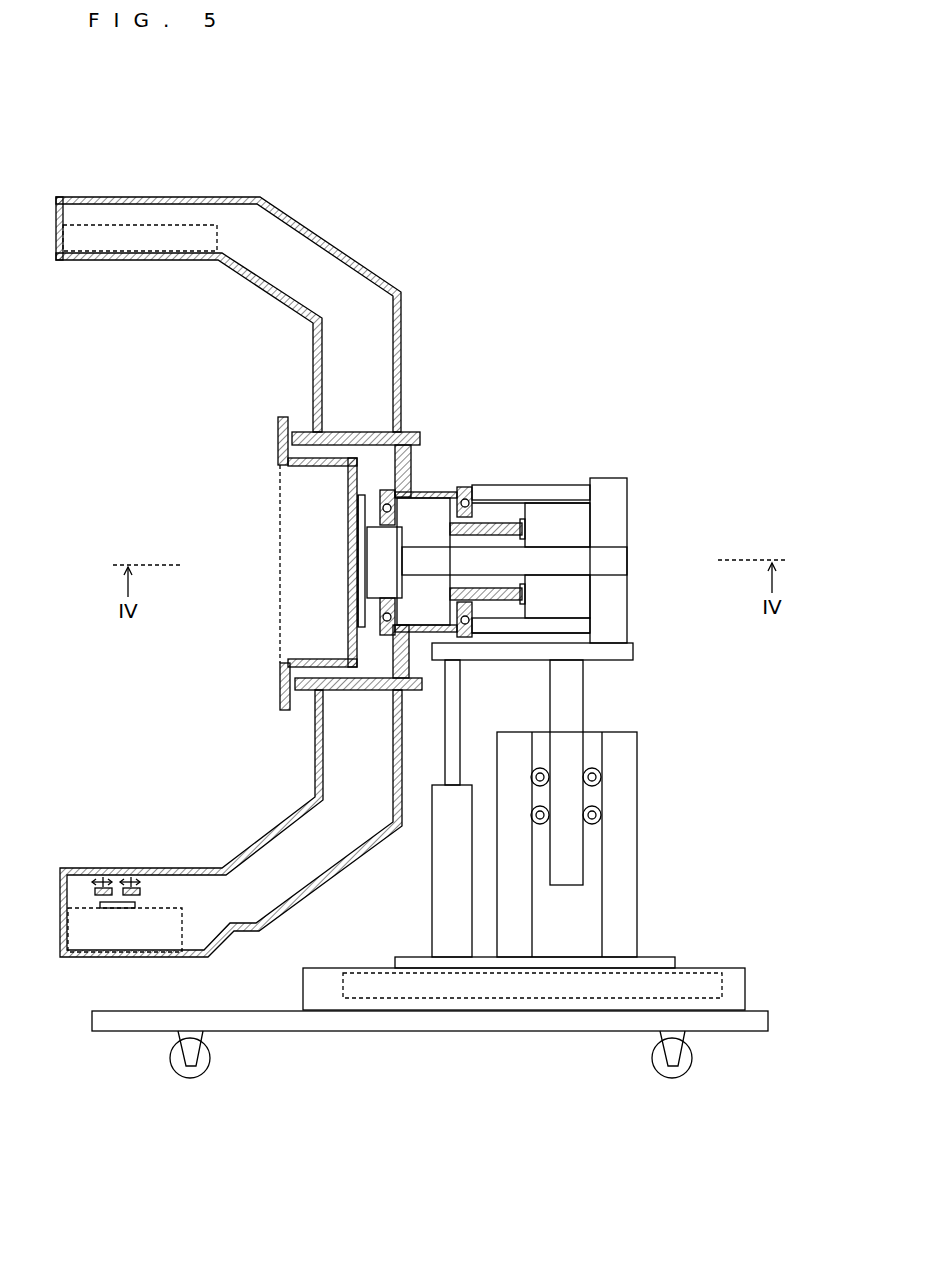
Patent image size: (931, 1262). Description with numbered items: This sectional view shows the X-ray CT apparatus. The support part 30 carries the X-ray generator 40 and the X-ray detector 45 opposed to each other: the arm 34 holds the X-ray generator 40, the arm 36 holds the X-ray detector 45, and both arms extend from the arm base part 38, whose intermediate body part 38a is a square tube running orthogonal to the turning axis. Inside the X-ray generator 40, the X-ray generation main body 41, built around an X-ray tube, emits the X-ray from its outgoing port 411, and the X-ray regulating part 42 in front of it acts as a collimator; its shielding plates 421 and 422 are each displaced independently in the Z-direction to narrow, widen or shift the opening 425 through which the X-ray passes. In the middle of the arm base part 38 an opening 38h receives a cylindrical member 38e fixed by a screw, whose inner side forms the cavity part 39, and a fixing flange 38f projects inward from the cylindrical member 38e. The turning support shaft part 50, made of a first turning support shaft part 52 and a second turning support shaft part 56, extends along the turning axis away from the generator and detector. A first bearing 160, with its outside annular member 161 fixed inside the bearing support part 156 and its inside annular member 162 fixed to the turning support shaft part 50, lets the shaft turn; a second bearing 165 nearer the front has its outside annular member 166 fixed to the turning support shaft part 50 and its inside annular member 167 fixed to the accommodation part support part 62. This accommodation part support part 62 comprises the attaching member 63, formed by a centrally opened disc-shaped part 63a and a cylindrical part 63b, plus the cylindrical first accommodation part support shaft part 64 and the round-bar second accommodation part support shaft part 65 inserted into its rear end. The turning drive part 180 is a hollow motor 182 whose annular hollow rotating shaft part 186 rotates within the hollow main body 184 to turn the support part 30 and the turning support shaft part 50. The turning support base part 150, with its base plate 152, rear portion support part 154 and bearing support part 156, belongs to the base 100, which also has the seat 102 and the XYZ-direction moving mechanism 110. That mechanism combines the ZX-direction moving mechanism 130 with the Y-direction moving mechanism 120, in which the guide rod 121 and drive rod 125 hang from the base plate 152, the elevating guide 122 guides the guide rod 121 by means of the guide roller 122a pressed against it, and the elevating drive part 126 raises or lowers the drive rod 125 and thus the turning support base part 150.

The support part 30 is at (265, 570).
The arm 36 is at (93, 196).
The X-ray detector 45 is at (218, 240).
The arm base part 38 is at (313, 358).
The intermediate body part 38a is at (402, 308).
The cylindrical member 38e is at (350, 432).
The fixing flange 38f is at (370, 432).
The opening 38h is at (292, 450).
The cavity part 39 is at (300, 462).
The arm 34 is at (243, 931).
The first turning support shaft part 52 is at (432, 490).
The first bearing 160 is at (464, 489).
The outside annular member 161 is at (466, 487).
The inside annular member 162 is at (444, 492).
The turning drive part 180 is at (584, 521).
The hollow motor 182 is at (584, 521).
The second turning support shaft part 56 is at (500, 520).
The turning support shaft part 50 is at (512, 521).
The bearing support part 156 is at (573, 484).
The rear portion support part 154 is at (613, 478).
The turning support base part 150 is at (579, 593).
The accommodation part support part 62 is at (577, 537).
The attaching member 63 is at (271, 558).
The disc-shaped part 63a is at (352, 508).
The cylindrical part 63b is at (367, 518).
The first accommodation part support shaft part 64 is at (539, 562).
The second accommodation part support shaft part 65 is at (615, 565).
The second bearing 165 is at (280, 570).
The outside annular member 166 is at (383, 622).
The inside annular member 167 is at (383, 608).
The hollow rotating shaft part 186 is at (582, 596).
The hollow main body 184 is at (587, 620).
The base plate 152 is at (633, 653).
The drive rod 125 is at (460, 692).
The elevating drive part 126 is at (432, 900).
The guide rod 121 is at (583, 692).
The Y-direction moving mechanism 120 is at (536, 808).
The elevating guide 122 is at (637, 843).
The guide roller 122a is at (598, 778).
The base 100 is at (444, 871).
The XYZ-direction moving mechanism 110 is at (640, 898).
The ZX-direction moving mechanism 130 is at (755, 982).
The seat 102 is at (762, 1033).
The X-ray generator 40 is at (114, 981).
The X-ray generation main body 41 is at (129, 991).
The outgoing port 411 is at (133, 952).
The X-ray regulating part 42 is at (101, 956).
The shielding plate 421 is at (100, 887).
The shielding plate 422 is at (130, 887).
The opening 425 is at (118, 908).